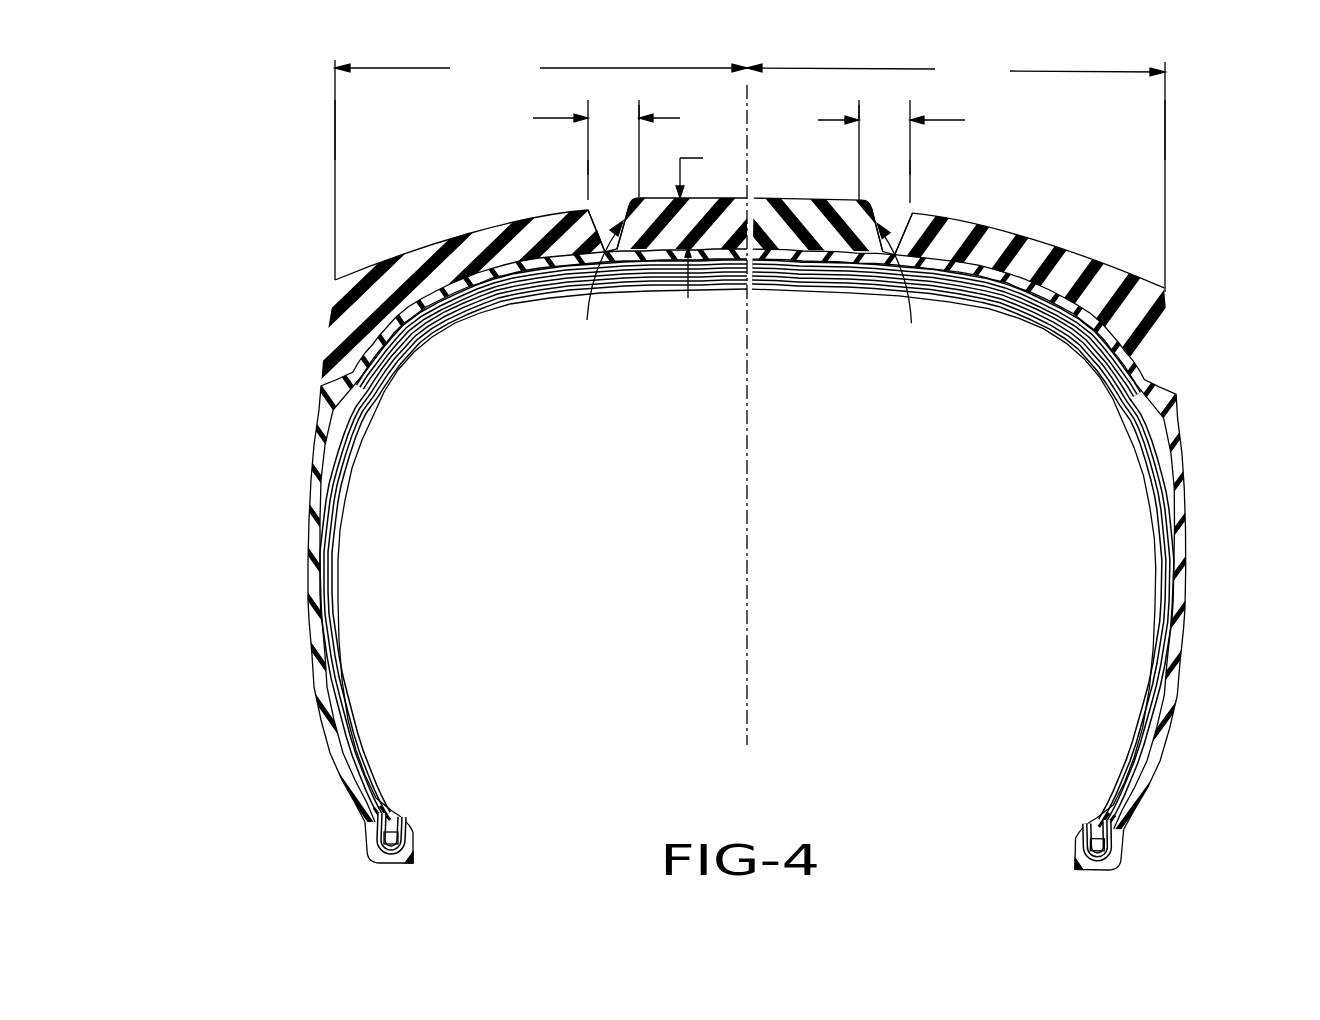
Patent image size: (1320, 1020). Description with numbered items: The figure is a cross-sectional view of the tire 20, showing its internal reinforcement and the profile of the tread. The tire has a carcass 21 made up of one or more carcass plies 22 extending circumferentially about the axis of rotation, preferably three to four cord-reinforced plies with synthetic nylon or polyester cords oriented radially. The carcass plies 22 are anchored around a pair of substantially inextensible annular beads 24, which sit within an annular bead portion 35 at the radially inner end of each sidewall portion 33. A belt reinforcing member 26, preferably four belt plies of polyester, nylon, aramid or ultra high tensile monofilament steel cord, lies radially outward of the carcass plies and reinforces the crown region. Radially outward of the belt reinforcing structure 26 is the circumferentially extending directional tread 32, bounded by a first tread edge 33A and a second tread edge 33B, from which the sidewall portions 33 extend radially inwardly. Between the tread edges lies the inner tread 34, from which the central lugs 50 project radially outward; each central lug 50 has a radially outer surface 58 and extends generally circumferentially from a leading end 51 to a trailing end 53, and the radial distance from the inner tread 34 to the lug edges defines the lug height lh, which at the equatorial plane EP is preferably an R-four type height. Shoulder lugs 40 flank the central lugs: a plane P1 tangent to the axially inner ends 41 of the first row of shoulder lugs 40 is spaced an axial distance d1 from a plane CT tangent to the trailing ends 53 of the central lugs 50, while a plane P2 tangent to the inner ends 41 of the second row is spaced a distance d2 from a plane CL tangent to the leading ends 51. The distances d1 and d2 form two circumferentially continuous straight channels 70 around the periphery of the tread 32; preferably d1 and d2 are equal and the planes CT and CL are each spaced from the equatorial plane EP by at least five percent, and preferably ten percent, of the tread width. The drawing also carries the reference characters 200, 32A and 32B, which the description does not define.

The tire 20 is at (660, 510).
The tire 200 is at (660, 510).
The carcass 21 is at (660, 510).
The carcass plies 22 is at (343, 648).
The annular beads 24 is at (397, 838).
The belt reinforcing member 26 is at (505, 303).
The tread 32 is at (777, 254).
The first tread half width 32A is at (541, 168).
The second tread half width 32B is at (956, 175).
The sidewall portion 33 is at (310, 592).
The first tread edge 33A is at (335, 130).
The second tread edge 33B is at (1166, 137).
The inner tread 34 is at (875, 256).
The annular bead portion 35 is at (357, 808).
The shoulder lugs 40 is at (393, 257).
The axially inner ends 41 is at (590, 210).
The central lugs 50 is at (781, 198).
The leading end 51 is at (635, 203).
The trailing end 53 is at (862, 204).
The radially outer surface 58 is at (452, 233).
The circumferentially continuous straight channels 70 is at (750, 284).
The equatorial plane EP is at (749, 387).
The axial distance d1 is at (606, 150).
The distance d2 is at (891, 151).
The plane P1 is at (588, 168).
The plane P2 is at (910, 168).
The plane CL is at (640, 112).
The plane CT is at (859, 112).
The radial lug height lh is at (702, 221).